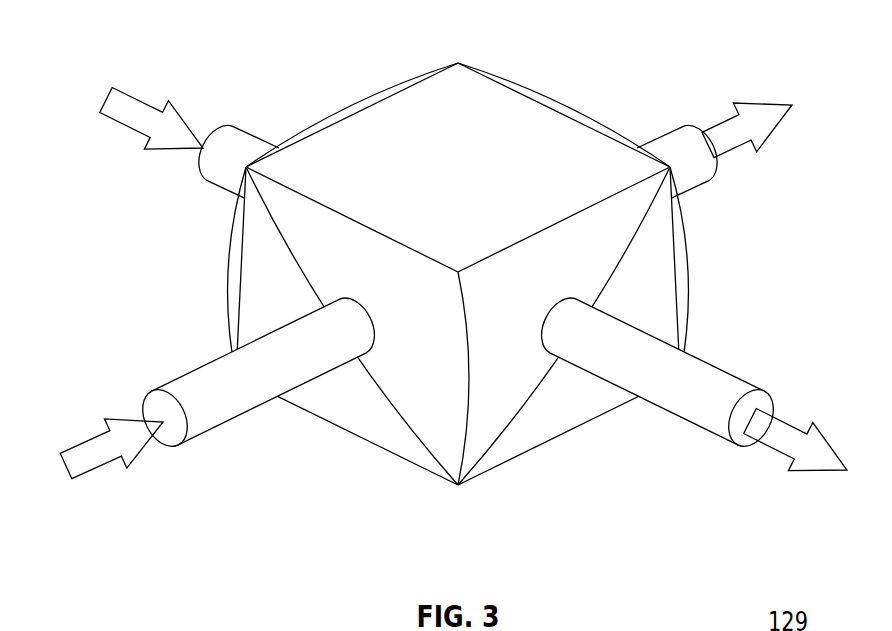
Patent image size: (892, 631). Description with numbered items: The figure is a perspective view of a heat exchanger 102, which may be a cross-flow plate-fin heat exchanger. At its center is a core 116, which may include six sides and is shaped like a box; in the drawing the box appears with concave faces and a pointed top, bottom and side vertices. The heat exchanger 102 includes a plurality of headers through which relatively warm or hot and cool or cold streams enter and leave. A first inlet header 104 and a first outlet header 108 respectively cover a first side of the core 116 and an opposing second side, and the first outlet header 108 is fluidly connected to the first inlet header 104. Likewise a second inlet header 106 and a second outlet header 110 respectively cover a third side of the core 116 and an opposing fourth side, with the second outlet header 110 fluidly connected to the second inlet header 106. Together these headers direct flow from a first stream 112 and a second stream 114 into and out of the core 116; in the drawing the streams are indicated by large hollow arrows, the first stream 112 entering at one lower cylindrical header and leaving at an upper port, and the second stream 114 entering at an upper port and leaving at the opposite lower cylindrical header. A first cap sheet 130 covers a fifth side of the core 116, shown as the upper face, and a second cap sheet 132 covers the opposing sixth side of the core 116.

The heat exchanger 102 is at (422, 52).
The first inlet header 104 is at (368, 427).
The second inlet header 106 is at (231, 265).
The first outlet header 108 is at (673, 143).
The second outlet header 110 is at (532, 428).
The first stream 112 is at (83, 440).
The second stream 114 is at (113, 120).
The core 116 is at (476, 45).
The first cap sheet 130 is at (557, 127).
The second cap sheet 132 is at (597, 417).